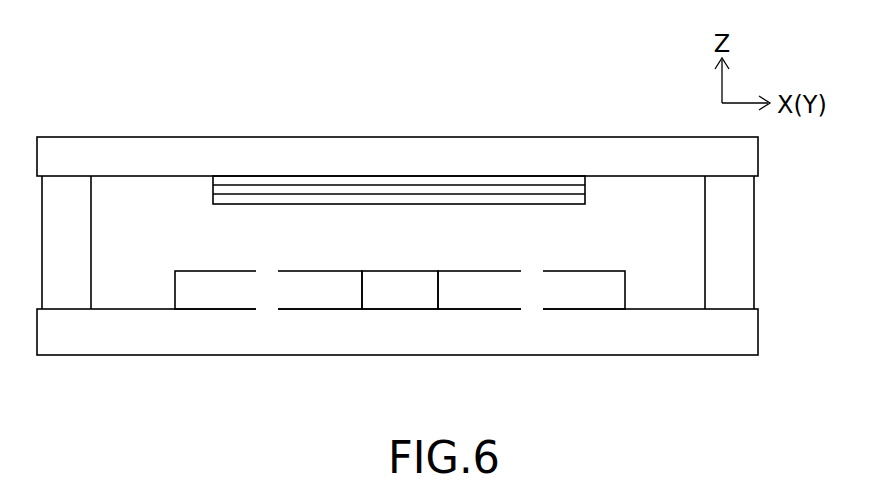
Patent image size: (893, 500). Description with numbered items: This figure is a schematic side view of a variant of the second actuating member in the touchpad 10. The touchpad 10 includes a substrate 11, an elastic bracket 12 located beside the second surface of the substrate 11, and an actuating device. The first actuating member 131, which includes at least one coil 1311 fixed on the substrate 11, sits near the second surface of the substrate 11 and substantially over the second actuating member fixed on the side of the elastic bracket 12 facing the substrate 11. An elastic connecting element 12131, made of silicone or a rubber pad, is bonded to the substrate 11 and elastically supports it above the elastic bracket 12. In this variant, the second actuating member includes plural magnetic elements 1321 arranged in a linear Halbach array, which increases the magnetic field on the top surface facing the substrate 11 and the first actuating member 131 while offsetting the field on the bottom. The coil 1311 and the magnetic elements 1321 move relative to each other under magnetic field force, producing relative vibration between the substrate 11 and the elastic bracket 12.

The touchpad 10 is at (132, 72).
The substrate 11 is at (560, 150).
The elastic bracket 12 is at (153, 338).
The elastic connecting element 12131 is at (742, 250).
The first actuating member 131 is at (361, 154).
The coil 1311 is at (332, 176).
The magnetic element 1321 is at (220, 283).